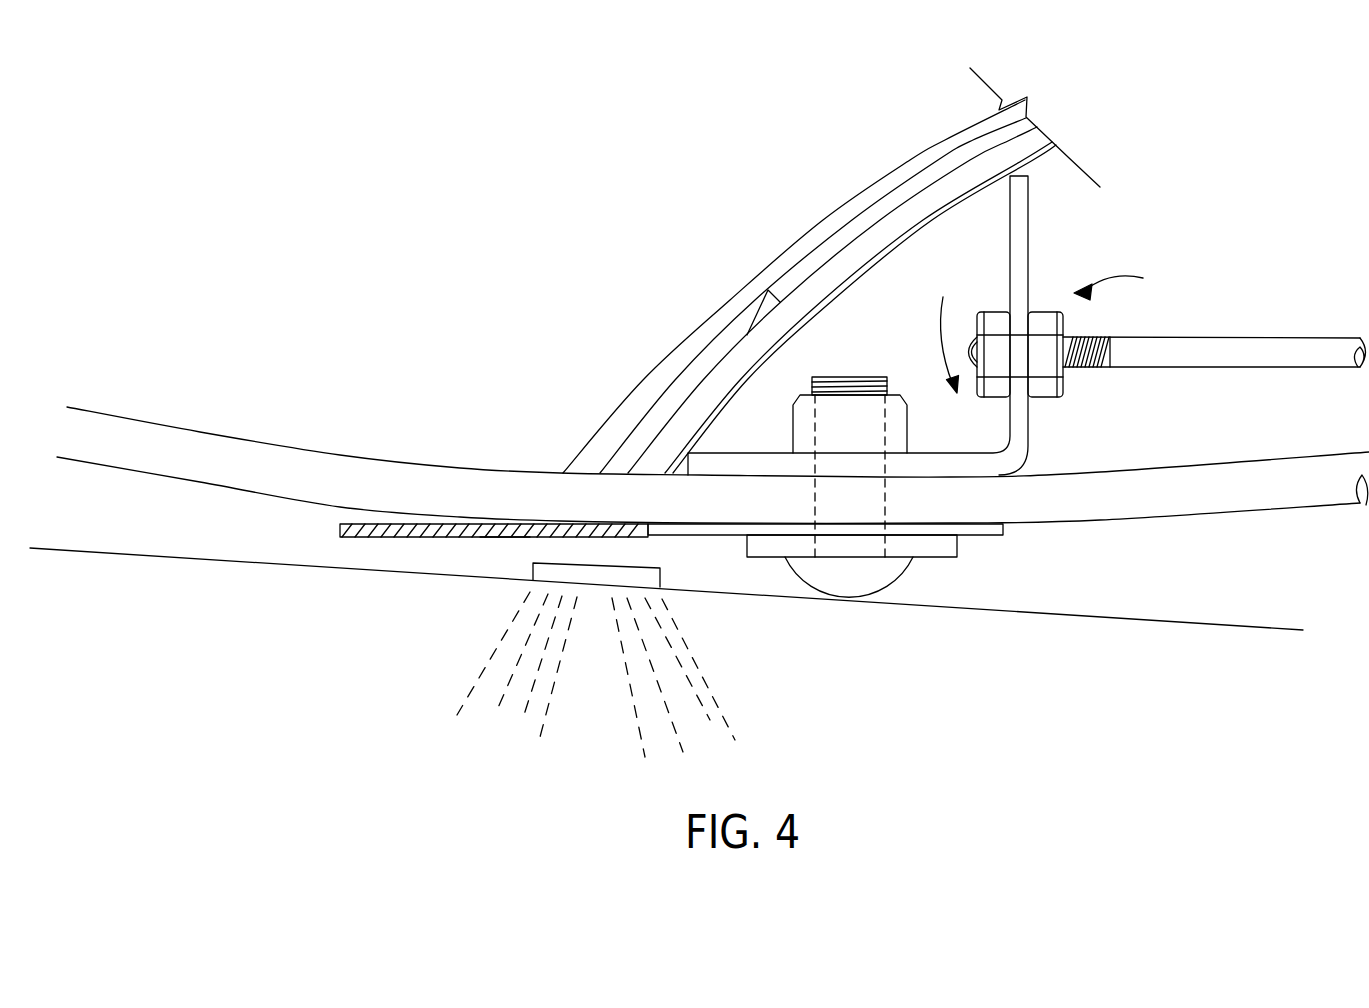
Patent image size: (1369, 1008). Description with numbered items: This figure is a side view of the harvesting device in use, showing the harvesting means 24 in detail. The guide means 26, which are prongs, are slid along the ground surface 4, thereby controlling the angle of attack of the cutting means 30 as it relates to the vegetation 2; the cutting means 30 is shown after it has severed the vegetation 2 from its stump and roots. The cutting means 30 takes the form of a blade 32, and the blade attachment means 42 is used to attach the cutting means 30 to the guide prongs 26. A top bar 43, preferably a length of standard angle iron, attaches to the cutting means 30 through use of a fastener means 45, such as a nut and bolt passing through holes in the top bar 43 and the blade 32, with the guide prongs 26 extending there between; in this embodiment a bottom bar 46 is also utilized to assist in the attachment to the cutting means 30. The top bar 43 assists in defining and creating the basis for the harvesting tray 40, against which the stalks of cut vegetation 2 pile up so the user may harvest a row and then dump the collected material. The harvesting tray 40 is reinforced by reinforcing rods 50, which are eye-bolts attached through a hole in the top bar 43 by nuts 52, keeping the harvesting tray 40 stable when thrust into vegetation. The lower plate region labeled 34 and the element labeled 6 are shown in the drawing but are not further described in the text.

The vegetation 2 is at (655, 368).
The ground surface 4 is at (1050, 613).
The nozzle 6 is at (635, 580).
The harvesting means 24 is at (1126, 282).
The guide means 26 is at (413, 490).
The cutting means 30 is at (710, 530).
The blade 32 is at (360, 525).
The plate lower surface 34 is at (503, 537).
The harvesting tray 40 is at (944, 329).
The blade attachment means 42 is at (841, 632).
The top bar 43 is at (1032, 240).
The fastener means 45 is at (907, 397).
The bottom bar 46 is at (940, 552).
The reinforcing rods 50 is at (1263, 335).
The nuts 52 is at (1048, 396).